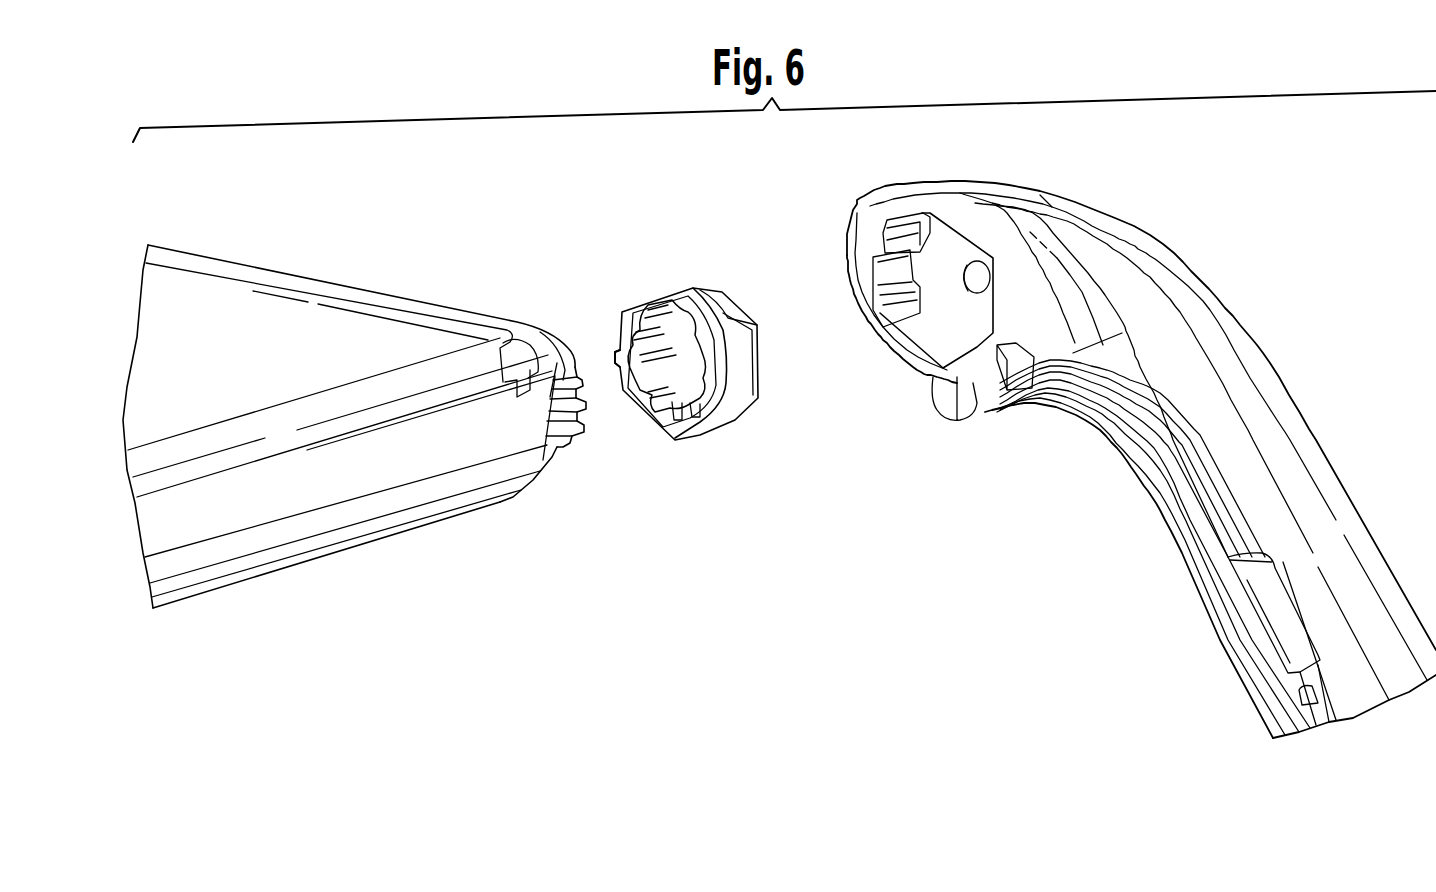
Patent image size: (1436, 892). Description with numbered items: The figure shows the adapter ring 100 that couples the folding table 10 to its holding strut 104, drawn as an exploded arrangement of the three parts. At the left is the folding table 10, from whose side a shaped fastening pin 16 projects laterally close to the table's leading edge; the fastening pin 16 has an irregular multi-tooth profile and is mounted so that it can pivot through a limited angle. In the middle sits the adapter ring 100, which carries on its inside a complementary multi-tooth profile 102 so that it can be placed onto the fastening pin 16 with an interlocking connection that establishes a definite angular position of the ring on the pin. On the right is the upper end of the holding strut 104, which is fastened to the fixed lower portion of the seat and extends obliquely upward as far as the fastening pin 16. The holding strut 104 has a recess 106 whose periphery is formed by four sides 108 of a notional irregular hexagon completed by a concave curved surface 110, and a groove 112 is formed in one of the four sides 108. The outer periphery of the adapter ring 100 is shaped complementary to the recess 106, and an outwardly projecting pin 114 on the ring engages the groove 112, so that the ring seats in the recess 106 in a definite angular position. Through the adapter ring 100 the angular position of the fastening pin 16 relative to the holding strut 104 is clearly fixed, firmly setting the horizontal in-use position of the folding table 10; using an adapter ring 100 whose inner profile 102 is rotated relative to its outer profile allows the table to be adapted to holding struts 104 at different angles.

The folding table 10 is at (380, 333).
The fastening pin 16 is at (577, 423).
The adapter ring 100 is at (707, 297).
The multi-tooth profile 102 is at (670, 378).
The holding strut 104 is at (1293, 407).
The recess 106 is at (947, 303).
The side 108 is at (947, 350).
The concave curved surface 110 is at (903, 223).
The groove 112 is at (883, 273).
The outwardly projecting pin 114 is at (614, 350).